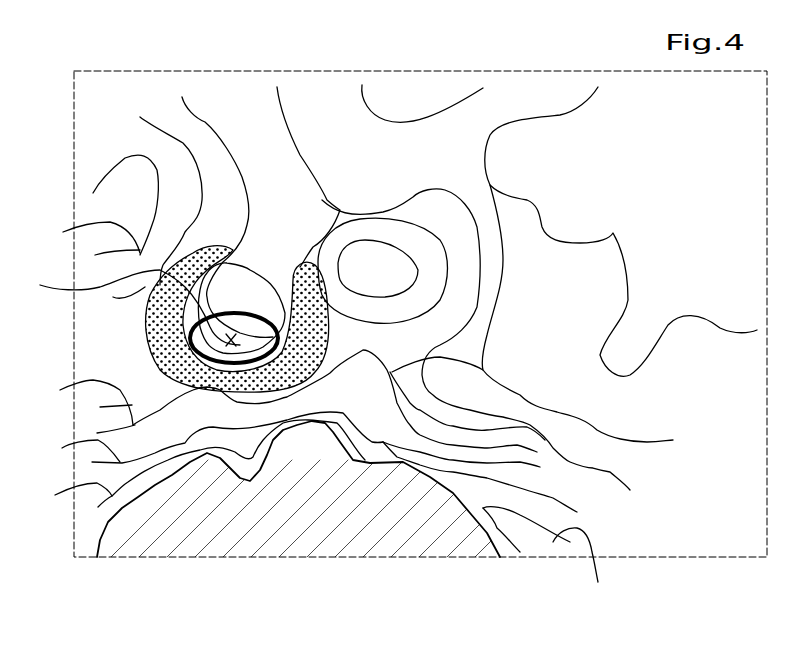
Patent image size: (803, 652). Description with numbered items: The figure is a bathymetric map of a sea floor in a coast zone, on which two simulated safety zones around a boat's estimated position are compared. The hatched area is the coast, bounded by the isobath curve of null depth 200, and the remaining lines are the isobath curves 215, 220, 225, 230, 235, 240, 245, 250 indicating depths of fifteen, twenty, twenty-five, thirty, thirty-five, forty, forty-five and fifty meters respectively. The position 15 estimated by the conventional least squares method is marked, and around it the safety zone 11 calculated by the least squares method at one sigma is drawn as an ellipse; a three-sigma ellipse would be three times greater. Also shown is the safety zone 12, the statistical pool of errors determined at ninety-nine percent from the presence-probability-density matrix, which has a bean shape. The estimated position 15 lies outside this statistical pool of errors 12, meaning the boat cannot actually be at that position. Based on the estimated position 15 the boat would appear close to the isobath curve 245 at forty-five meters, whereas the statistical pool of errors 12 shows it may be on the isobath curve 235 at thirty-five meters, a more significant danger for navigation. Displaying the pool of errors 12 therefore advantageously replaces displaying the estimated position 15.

The safety zone 11 is at (126, 307).
The statistical pool of errors 12 is at (143, 322).
The estimated position 15 is at (231, 340).
The isobath curve of null depth 200 is at (505, 545).
The isobath curve 215 is at (550, 559).
The isobath curve 220 is at (189, 463).
The isobath curve 225 is at (297, 462).
The isobath curve 230 is at (392, 296).
The isobath curve 235 is at (155, 127).
The isobath curve 240 is at (205, 122).
The isobath curve 245 is at (283, 280).
The isobath curve 250 is at (610, 240).